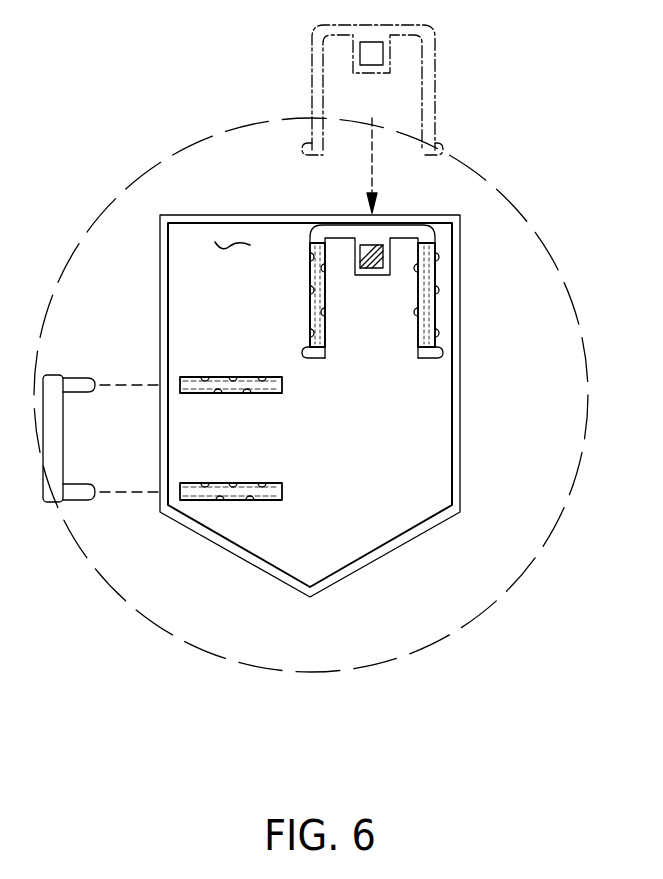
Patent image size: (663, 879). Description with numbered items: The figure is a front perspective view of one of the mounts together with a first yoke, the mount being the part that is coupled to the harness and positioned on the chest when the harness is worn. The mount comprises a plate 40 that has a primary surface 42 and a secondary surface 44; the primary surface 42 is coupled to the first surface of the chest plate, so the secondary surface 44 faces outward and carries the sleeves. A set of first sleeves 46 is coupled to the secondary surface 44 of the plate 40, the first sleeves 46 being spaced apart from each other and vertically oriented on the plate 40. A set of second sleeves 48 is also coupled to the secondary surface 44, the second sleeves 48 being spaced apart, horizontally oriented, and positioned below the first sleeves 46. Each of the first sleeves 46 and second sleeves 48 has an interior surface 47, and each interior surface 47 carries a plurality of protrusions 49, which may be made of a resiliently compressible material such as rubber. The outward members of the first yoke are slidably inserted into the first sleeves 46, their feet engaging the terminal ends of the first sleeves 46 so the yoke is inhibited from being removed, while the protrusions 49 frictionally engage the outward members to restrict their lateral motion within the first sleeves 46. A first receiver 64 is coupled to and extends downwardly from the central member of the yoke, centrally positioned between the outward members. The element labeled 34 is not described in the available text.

The connector 34 is at (423, 209).
The plate 40 is at (160, 242).
The primary surface 42 is at (398, 547).
The secondary surface 44 is at (232, 246).
The first sleeves 46 is at (325, 312).
The interior surface 47 is at (181, 378).
The second sleeves 48 is at (200, 393).
The protrusions 49 is at (248, 392).
The first receiver 64 is at (310, 252).